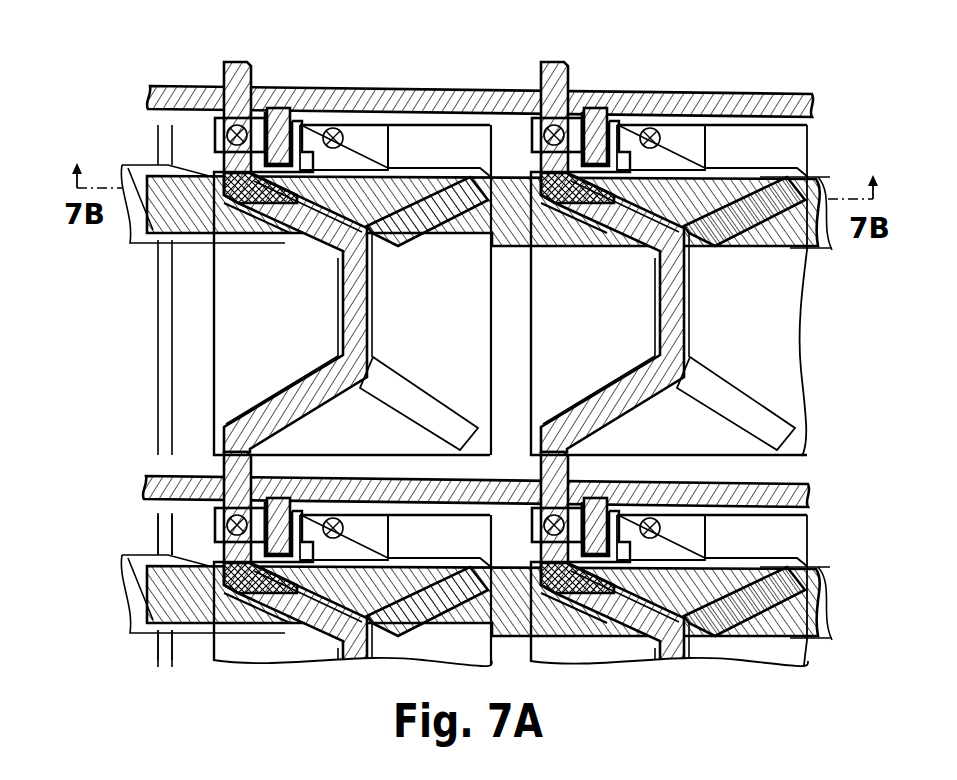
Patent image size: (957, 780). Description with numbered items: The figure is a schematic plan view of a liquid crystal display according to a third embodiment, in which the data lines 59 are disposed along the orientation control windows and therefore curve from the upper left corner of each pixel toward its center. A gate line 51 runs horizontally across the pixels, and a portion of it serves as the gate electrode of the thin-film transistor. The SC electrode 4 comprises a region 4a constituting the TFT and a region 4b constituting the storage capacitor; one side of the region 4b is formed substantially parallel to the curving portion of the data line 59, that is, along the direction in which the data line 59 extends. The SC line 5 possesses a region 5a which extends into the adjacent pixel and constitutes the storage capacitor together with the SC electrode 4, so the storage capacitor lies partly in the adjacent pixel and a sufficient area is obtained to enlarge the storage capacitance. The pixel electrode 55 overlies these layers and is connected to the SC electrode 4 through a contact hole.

The SC electrode 4 is at (373, 130).
The region constituting the TFT 4a is at (296, 128).
The region constituting the storage capacitor 4b is at (409, 164).
The SC line 5 is at (152, 212).
The region extending to the adjacent pixel 5a is at (441, 180).
The gate line 51 is at (815, 103).
The pixel electrode 55 is at (479, 135).
The data line 59 is at (243, 60).